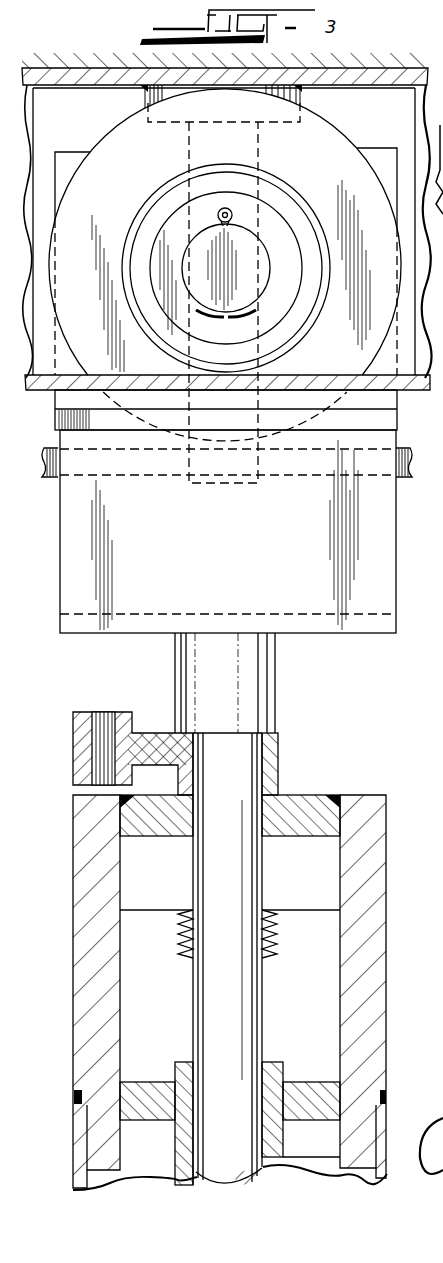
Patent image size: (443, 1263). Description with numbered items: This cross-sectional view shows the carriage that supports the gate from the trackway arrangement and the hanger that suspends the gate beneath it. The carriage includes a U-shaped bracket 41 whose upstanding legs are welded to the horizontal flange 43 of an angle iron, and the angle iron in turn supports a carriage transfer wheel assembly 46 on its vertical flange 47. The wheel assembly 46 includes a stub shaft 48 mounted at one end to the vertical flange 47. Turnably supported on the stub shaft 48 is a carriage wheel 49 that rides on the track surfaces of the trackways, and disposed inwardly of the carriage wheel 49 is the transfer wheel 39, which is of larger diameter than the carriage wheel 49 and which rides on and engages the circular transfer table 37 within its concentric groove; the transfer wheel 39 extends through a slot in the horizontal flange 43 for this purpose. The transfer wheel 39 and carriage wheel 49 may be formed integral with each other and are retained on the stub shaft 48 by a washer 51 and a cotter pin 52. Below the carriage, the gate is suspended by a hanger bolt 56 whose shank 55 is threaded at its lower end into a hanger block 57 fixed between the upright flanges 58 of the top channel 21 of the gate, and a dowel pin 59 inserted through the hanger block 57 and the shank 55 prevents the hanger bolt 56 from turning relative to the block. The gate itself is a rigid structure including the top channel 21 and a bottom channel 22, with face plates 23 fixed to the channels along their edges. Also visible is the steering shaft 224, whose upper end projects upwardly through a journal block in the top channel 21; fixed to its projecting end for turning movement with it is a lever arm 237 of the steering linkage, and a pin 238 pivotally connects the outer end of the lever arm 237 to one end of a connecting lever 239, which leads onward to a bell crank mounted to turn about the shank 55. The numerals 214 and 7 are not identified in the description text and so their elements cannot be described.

The transfer wheel 39 is at (322, 138).
The carriage transfer wheel assembly 46 is at (368, 138).
The vertical flange 47 is at (70, 162).
The carriage wheel 49 is at (287, 190).
The washer 51 is at (300, 228).
The stub shaft 48 is at (249, 286).
The cotter pin 52 is at (232, 216).
The horizontal flange 43 is at (115, 422).
The U-shaped bracket 41 is at (80, 558).
The transfer table 37 is at (404, 478).
The pin 238 is at (428, 490).
The connecting lever 239 is at (429, 556).
The dowel pin 59 is at (435, 633).
The upright flange 58 is at (435, 710).
The bottom channel 22 is at (435, 819).
The member 214 is at (432, 951).
The shank 55 is at (200, 672).
The hanger bolt 56 is at (276, 666).
The lever arm 237 is at (160, 744).
The top channel 21 is at (387, 970).
The face plate 23 is at (80, 1140).
The thread 7 is at (183, 952).
The hanger block 57 is at (289, 893).
The steering shaft 224 is at (240, 1002).